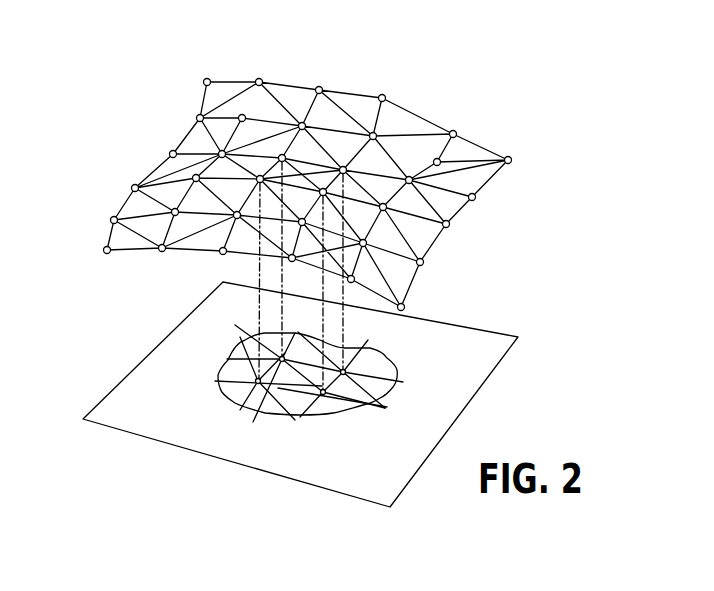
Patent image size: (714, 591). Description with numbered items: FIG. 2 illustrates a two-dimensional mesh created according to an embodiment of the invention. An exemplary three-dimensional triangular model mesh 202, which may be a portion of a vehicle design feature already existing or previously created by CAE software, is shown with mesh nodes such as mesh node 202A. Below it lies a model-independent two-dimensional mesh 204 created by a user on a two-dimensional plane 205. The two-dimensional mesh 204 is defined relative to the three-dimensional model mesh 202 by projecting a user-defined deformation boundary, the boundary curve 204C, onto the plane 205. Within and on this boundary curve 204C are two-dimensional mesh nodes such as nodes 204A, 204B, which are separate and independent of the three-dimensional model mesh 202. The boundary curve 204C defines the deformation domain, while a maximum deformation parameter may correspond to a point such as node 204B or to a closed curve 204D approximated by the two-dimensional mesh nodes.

The 3D triangular model mesh 202 is at (308, 155).
The mesh node 202A is at (397, 109).
The model-independent 2D mesh 204 is at (290, 406).
The 2D mesh node 204A is at (324, 403).
The 2D mesh node 204B is at (262, 414).
The boundary curve 204C is at (392, 356).
The closed curve 204D is at (282, 356).
The 2D plane 205 is at (135, 367).